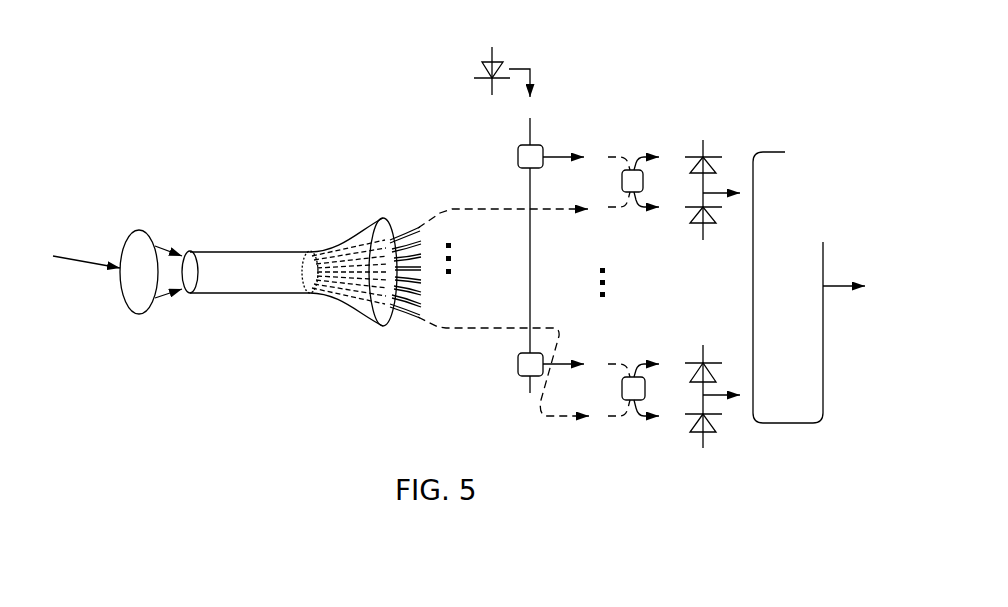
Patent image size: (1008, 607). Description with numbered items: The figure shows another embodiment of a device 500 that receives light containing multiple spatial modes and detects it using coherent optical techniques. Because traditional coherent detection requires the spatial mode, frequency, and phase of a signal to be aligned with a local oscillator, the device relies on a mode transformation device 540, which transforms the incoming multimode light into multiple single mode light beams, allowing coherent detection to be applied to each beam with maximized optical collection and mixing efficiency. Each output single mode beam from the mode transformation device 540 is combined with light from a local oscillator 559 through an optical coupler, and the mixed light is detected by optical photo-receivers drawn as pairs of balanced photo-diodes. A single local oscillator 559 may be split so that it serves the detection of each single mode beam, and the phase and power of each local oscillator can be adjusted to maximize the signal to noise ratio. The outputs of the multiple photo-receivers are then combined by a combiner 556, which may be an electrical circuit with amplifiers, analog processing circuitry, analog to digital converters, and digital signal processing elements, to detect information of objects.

The device 500 is at (300, 92).
The mode transformation device 540 is at (252, 230).
The combiner 556 is at (787, 424).
The local oscillator 559 is at (476, 48).